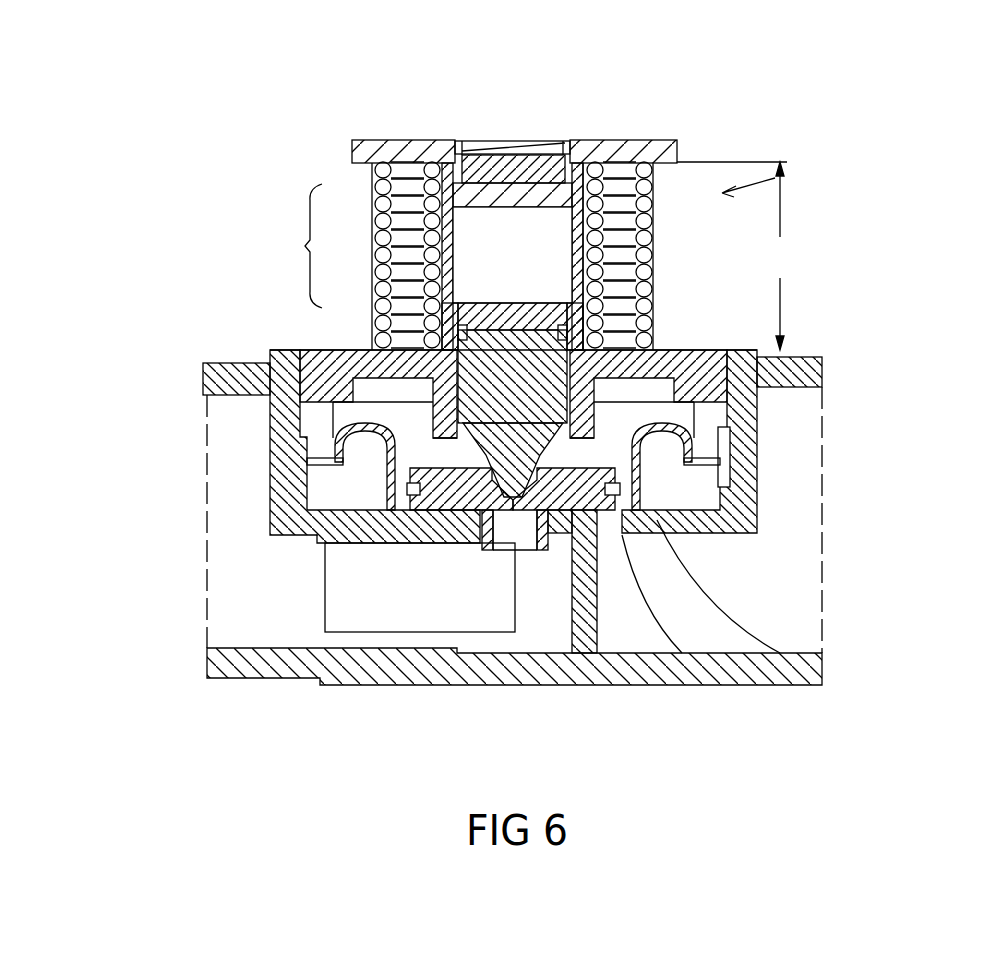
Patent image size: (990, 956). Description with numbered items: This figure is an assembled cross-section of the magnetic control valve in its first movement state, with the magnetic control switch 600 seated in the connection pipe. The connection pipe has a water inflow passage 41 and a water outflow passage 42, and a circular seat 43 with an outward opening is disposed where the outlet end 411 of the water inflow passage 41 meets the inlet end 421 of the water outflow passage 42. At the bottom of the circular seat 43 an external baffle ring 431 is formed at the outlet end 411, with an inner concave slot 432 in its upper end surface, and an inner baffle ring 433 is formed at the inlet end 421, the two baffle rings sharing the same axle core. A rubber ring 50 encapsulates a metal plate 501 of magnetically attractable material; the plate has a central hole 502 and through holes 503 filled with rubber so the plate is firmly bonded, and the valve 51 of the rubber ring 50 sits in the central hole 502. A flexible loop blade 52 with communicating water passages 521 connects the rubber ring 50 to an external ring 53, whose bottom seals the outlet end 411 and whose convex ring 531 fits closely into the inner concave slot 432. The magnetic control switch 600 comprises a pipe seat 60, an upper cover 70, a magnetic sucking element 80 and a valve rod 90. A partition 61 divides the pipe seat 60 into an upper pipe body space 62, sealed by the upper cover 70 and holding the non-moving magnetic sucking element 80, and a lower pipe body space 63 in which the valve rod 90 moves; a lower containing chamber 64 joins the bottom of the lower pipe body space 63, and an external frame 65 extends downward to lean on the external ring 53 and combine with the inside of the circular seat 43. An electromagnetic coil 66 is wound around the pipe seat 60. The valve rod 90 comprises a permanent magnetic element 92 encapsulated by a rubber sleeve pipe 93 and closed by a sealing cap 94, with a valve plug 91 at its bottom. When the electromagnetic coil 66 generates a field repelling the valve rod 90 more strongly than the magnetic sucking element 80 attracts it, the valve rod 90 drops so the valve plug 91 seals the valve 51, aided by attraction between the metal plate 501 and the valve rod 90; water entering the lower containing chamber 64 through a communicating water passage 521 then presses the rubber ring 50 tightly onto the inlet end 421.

The magnetic control switch 600 is at (762, 160).
The magnetic sucking element 80 is at (475, 167).
The upper cover 70 is at (510, 148).
The upper pipe body space 62 is at (548, 167).
The lower pipe body space 63 is at (453, 215).
The pipe seat 60 is at (573, 195).
The partition 61 is at (580, 228).
The electromagnetic coil 66 is at (593, 272).
The valve rod 90 is at (465, 255).
The sealing cap 94 is at (495, 228).
The magnetic element 92 is at (503, 303).
The rubber sleeve pipe 93 is at (488, 350).
The rubber ring 50 is at (405, 467).
The communicating water passage 521 is at (663, 420).
The circular seat 43 is at (707, 350).
The external frame 65 is at (708, 428).
The lower containing chamber 64 is at (347, 415).
The external ring 53 is at (345, 440).
The flexible loop blade 52 is at (382, 470).
The convex ring 531 is at (708, 485).
The inner concave slot 432 is at (743, 503).
The external baffle ring 431 is at (717, 538).
The water inflow passage 41 is at (765, 602).
The outlet end 411 is at (780, 653).
The water outflow passage 42 is at (245, 635).
The metal plate 501 is at (420, 500).
The through holes 503 is at (460, 495).
The valve plug 91 is at (470, 478).
The valve 51 is at (515, 485).
The central hole 502 is at (520, 537).
The inlet end 421 is at (560, 533).
The inner baffle ring 433 is at (608, 515).